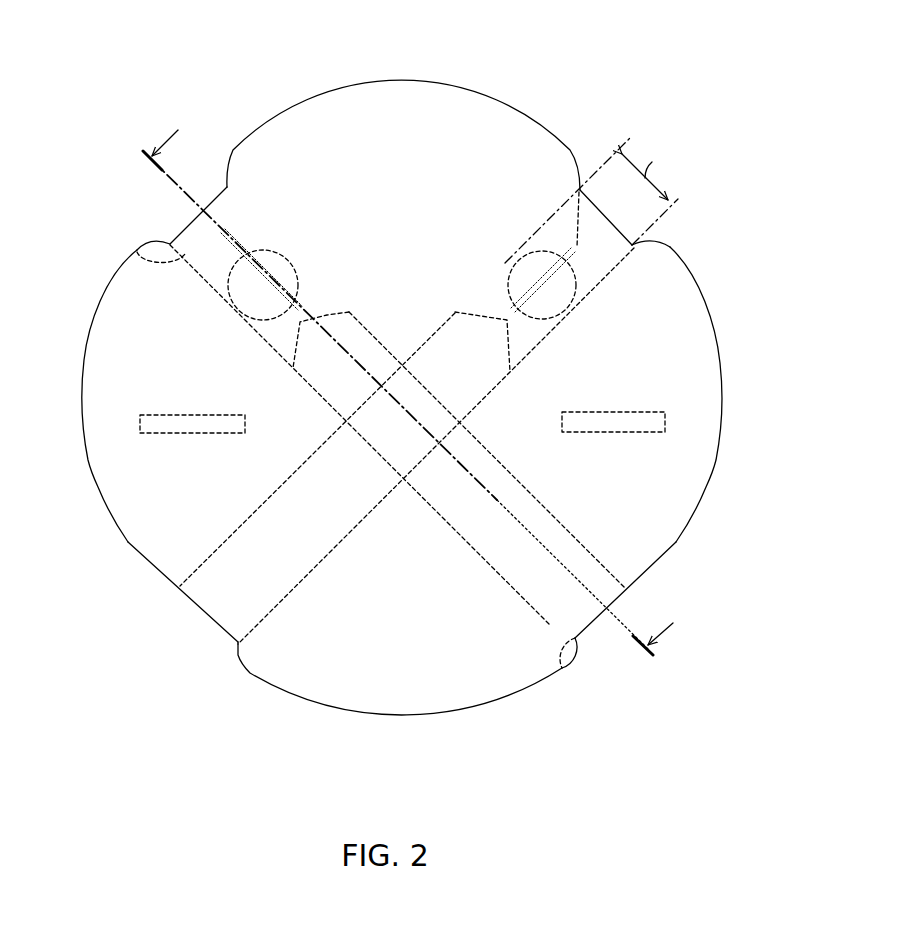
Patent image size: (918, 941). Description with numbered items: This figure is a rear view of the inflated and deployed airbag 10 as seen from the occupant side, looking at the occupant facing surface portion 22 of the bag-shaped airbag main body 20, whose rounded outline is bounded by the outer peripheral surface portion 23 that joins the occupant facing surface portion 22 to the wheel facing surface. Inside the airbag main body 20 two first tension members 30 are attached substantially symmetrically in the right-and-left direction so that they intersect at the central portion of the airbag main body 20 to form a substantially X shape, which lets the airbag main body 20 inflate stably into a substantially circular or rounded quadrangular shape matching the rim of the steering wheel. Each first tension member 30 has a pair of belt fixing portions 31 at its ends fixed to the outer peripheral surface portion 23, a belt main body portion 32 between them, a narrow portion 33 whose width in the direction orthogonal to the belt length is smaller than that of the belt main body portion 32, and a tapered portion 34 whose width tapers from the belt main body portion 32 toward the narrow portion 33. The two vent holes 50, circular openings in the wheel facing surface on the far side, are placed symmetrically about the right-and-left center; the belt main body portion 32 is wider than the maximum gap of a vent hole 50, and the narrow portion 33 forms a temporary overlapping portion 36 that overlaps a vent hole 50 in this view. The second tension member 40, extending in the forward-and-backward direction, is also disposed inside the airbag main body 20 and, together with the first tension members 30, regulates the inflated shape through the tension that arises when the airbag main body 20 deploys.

The airbag 10 is at (228, 692).
The airbag main body 20 is at (505, 101).
The occupant facing surface portion 22 is at (467, 660).
The outer peripheral surface portion 23 is at (722, 397).
The first tension member 30 is at (226, 541).
The belt fixing portion 31 is at (148, 246).
The belt main body portion 32 is at (535, 492).
The narrow portion 33 is at (300, 322).
The tapered portion 34 is at (228, 190).
The temporary overlapping portion 36 is at (255, 290).
The second tension member 40 is at (192, 436).
The vent hole 50 is at (293, 262).